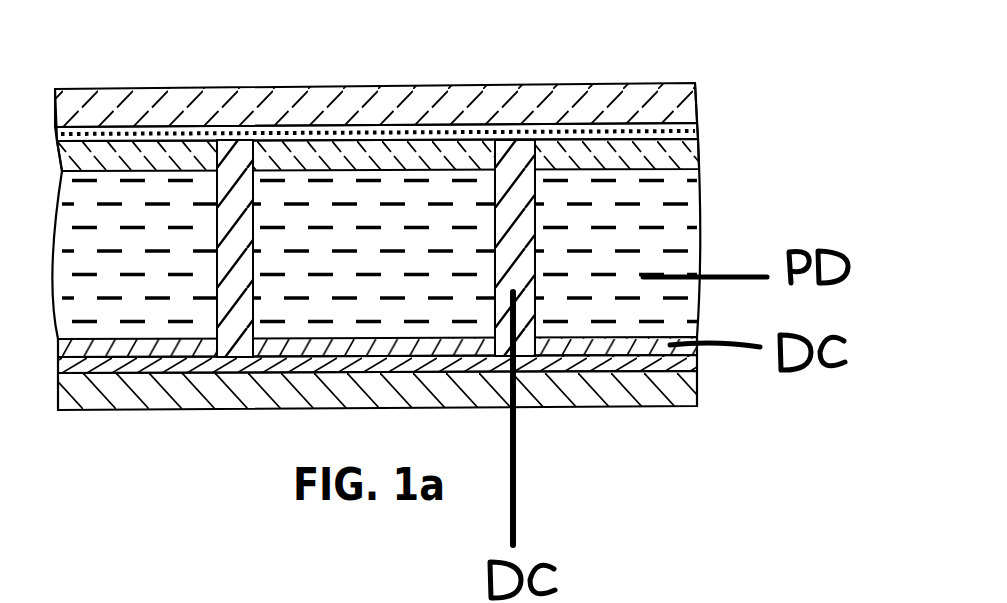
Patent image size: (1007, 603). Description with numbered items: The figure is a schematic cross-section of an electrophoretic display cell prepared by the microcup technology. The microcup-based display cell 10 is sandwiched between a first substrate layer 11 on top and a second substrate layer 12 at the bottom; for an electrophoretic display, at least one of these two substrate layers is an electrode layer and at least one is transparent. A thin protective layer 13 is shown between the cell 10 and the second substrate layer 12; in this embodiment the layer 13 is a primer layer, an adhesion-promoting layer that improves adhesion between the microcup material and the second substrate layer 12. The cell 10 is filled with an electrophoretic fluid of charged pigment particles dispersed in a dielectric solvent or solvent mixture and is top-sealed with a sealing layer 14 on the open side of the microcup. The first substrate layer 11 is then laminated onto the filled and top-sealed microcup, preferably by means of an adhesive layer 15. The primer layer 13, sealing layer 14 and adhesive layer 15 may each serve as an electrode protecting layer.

The microcup-based display cell 10 is at (670, 233).
The first substrate layer 11 is at (505, 84).
The second substrate layer 12 is at (550, 388).
The primer layer 13 is at (228, 358).
The sealing layer 14 is at (347, 150).
The adhesive layer 15 is at (168, 133).